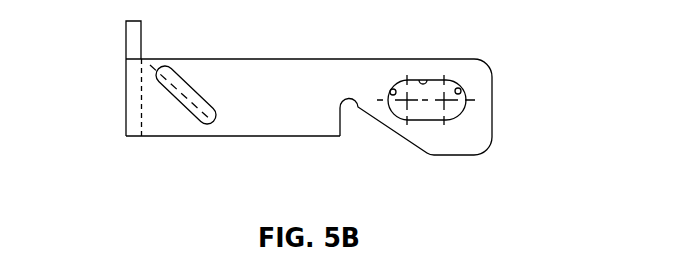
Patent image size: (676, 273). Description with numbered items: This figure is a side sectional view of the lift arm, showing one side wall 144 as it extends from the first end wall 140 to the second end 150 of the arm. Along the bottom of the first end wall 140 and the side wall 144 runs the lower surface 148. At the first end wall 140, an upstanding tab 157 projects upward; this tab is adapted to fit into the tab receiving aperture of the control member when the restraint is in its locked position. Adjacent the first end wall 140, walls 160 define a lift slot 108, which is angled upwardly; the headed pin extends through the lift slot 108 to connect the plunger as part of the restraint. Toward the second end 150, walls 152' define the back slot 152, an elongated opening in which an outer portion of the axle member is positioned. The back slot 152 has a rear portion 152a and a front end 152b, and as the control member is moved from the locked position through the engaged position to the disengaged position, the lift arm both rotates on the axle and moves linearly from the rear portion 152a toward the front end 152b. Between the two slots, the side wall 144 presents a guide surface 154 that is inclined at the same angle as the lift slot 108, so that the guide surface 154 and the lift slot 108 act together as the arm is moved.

The lift slot 108 is at (183, 83).
The first end wall 140 is at (126, 97).
The side wall 144 is at (275, 70).
The lower surface 148 is at (172, 137).
The second end 150 is at (493, 106).
The back slot 152 is at (426, 136).
The rear portion 152a is at (462, 89).
The front end 152b is at (400, 79).
The wall 152' is at (466, 61).
The guide surface 154 is at (413, 145).
The upstanding tab 157 is at (126, 31).
The wall 160 is at (193, 118).